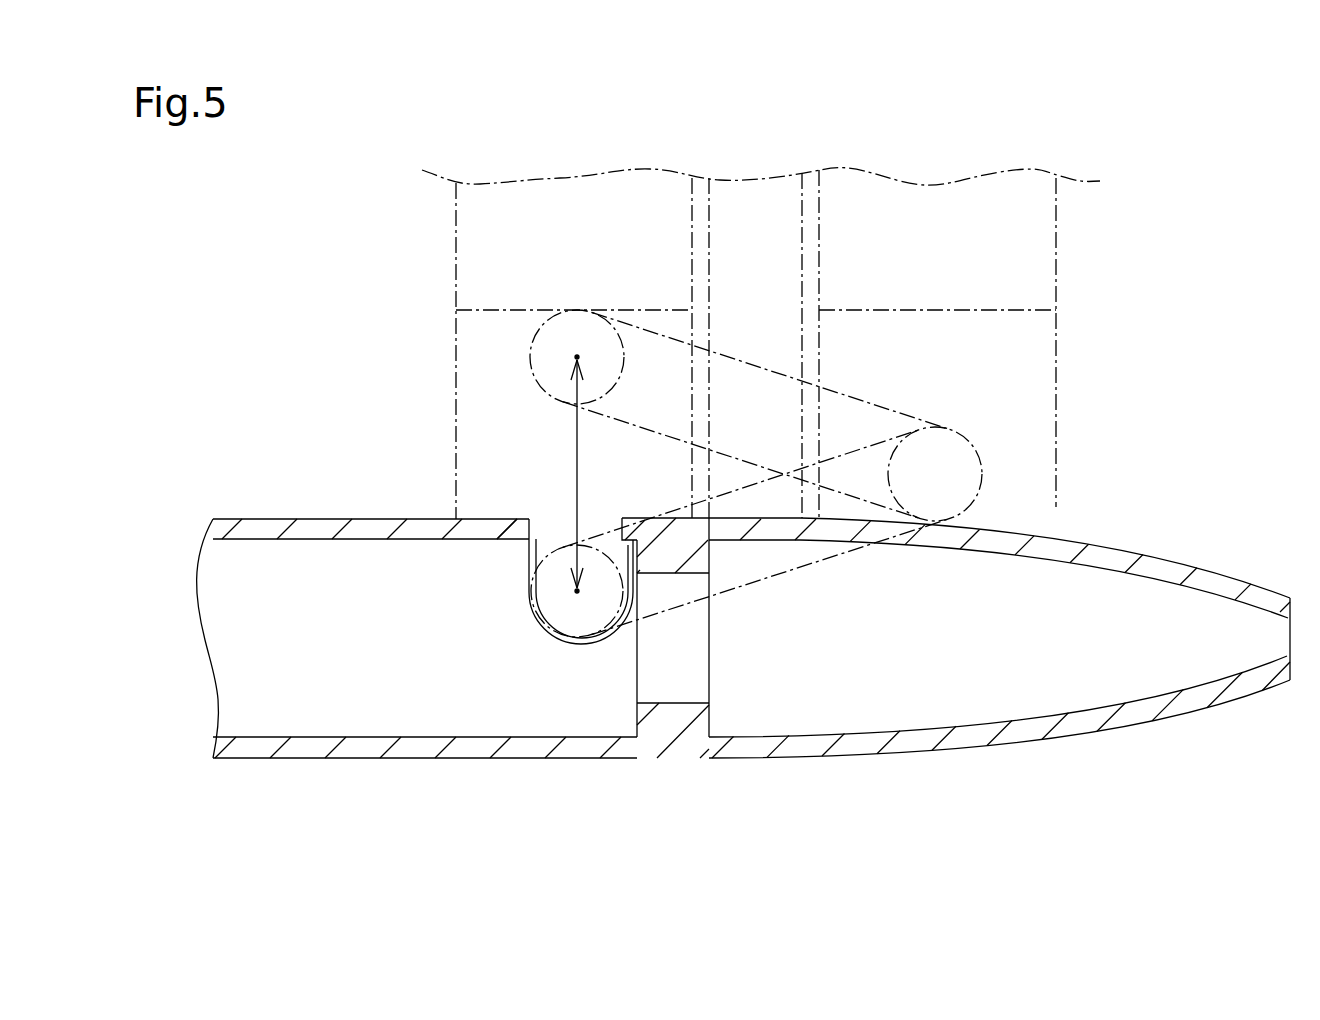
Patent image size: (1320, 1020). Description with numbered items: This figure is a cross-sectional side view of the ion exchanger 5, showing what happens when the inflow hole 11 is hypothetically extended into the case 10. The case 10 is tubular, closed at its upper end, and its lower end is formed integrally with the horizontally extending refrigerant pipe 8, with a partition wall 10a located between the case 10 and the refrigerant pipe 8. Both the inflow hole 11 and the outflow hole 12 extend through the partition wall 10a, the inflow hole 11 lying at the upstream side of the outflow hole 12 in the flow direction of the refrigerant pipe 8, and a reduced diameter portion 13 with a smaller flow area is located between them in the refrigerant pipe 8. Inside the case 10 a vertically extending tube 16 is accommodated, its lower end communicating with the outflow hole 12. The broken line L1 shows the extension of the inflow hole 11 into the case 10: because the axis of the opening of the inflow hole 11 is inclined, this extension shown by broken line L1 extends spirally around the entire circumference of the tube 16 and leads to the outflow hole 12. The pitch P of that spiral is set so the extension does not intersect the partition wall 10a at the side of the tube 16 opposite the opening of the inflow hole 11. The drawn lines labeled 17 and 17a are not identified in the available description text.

The ion exchanger 5 is at (1172, 218).
The refrigerant pipe 8 is at (318, 519).
The case 10 is at (456, 257).
The partition wall 10a is at (516, 530).
The inflow hole 11 is at (537, 548).
The outflow hole 12 is at (798, 528).
The reduced diameter portion 13 is at (635, 714).
The tube 16 is at (819, 230).
The nip portion 17 is at (937, 342).
The nip line 17a is at (889, 311).
The broken line L1 is at (857, 398).
The pitch P is at (585, 474).